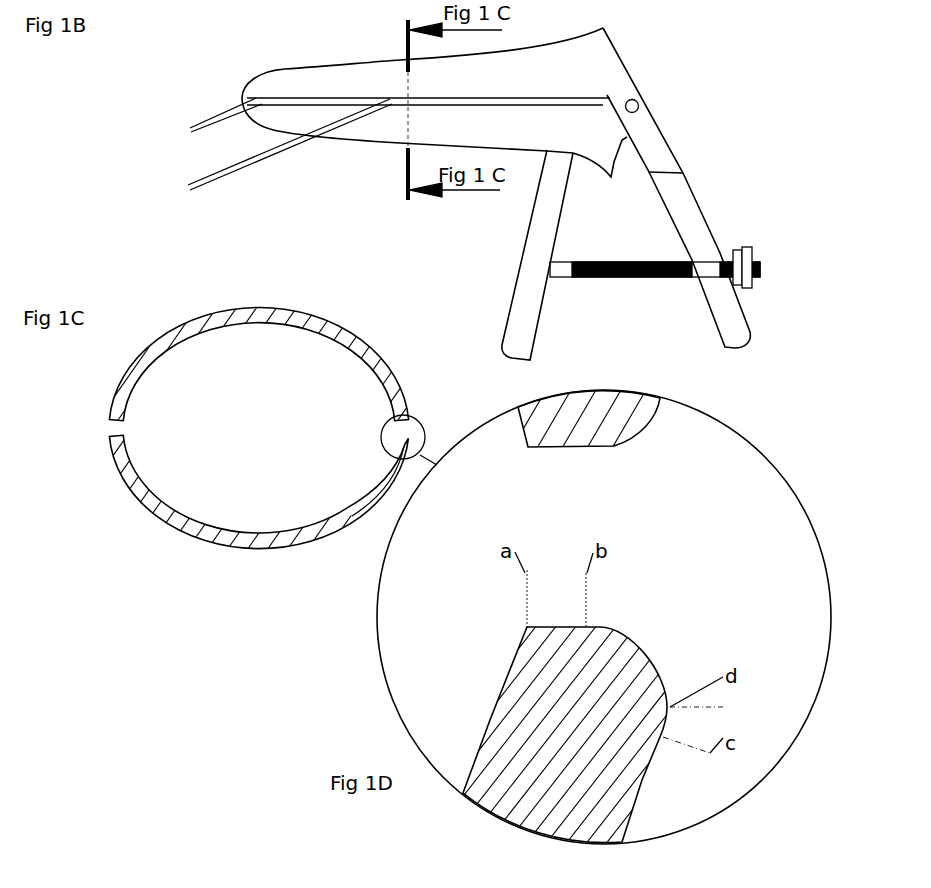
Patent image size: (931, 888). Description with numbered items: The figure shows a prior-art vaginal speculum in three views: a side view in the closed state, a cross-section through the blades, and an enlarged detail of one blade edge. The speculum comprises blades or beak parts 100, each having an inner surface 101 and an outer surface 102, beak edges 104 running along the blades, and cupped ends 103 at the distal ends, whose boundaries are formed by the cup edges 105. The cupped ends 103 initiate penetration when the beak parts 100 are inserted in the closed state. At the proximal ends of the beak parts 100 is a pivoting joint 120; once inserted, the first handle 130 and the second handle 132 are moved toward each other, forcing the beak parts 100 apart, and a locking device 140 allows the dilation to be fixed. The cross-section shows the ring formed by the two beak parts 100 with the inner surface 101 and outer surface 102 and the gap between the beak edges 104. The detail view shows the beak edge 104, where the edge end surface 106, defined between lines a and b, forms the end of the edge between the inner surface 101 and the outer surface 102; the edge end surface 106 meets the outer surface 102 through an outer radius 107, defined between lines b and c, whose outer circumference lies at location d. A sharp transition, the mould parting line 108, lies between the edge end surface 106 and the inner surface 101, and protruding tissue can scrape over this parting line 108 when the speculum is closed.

In FIG. 1C, the beak parts 100 is at (324, 425).
In FIG. 1C, the inner surface 101 is at (357, 436).
In FIG. 1D, the inner surface 101 is at (495, 710).
In FIG. 1B, the outer surface 102 is at (392, 78).
In FIG. 1C, the outer surface 102 is at (140, 358).
In FIG. 1D, the outer surface 102 is at (642, 788).
In FIG. 1B, the cupped ends 103 is at (262, 117).
In FIG. 1B, the beak edges 104 is at (268, 149).
In FIG. 1C, the beak edges 104 is at (220, 485).
In FIG. 1D, the beak edges 104 is at (588, 690).
In FIG. 1B, the cup edges 105 is at (377, 120).
In FIG. 1D, the edge end surface 106 is at (581, 537).
In FIG. 1D, the outer radius 107 is at (692, 545).
In FIG. 1D, the parting line 108 is at (476, 537).
In FIG. 1B, the pivoting joint 120 is at (645, 102).
In FIG. 1B, the first handle 130 is at (528, 271).
In FIG. 1B, the second handle 132 is at (697, 235).
In FIG. 1B, the locking device 140 is at (737, 258).